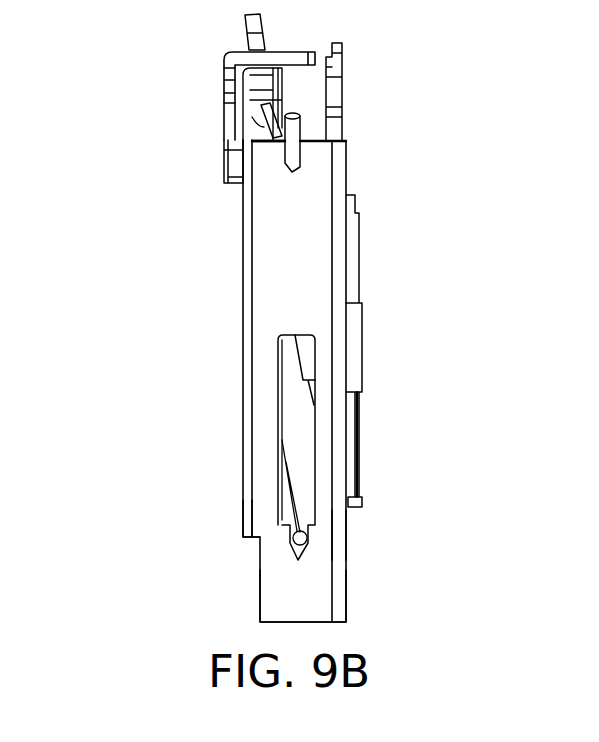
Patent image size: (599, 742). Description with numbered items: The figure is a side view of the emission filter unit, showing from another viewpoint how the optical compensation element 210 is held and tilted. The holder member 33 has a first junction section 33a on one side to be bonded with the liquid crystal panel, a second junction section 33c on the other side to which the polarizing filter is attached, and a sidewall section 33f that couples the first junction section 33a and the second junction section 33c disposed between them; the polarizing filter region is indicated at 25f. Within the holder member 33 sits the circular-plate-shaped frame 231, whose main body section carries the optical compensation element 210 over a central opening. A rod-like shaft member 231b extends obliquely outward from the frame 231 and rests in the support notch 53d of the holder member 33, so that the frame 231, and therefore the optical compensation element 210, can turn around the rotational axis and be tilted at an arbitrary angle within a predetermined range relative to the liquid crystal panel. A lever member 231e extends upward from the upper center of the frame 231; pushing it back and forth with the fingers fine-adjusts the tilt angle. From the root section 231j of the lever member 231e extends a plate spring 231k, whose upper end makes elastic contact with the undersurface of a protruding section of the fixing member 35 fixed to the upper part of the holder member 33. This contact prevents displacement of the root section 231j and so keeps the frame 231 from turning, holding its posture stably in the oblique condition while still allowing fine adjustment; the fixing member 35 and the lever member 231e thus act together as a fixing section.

The holder member 33 is at (245, 380).
The first junction section 33a is at (252, 506).
The second junction section 33c is at (340, 531).
The sidewall section 33f is at (327, 582).
The optical compensation element 210 is at (299, 467).
The guide rail 25f is at (347, 253).
The frame 231 is at (246, 108).
The lever member 231e is at (250, 33).
The plate spring 231k is at (268, 80).
The root section 231j is at (275, 98).
The shaft member 231b is at (290, 152).
The fixing member 35 is at (221, 130).
The support notch 53d is at (287, 163).